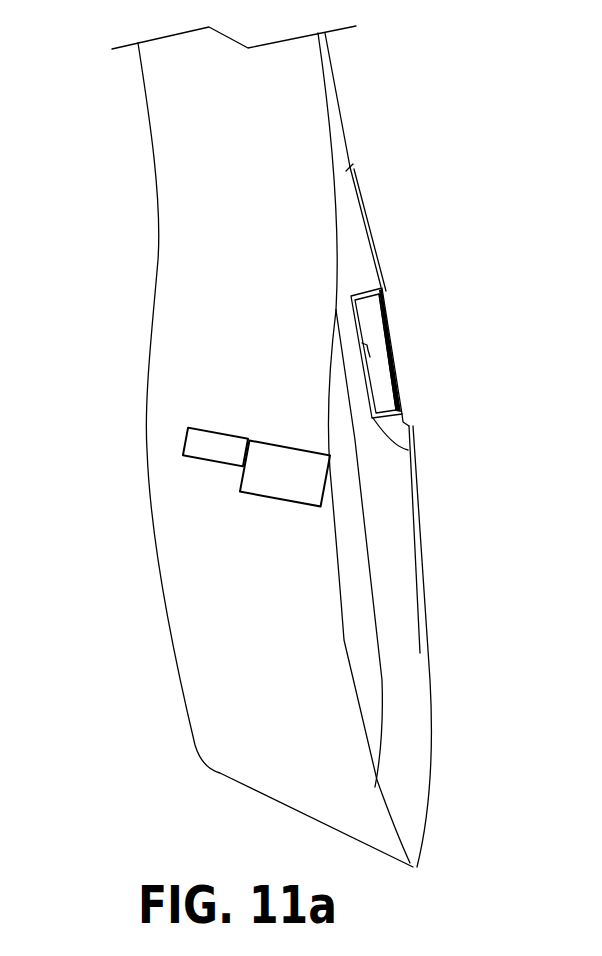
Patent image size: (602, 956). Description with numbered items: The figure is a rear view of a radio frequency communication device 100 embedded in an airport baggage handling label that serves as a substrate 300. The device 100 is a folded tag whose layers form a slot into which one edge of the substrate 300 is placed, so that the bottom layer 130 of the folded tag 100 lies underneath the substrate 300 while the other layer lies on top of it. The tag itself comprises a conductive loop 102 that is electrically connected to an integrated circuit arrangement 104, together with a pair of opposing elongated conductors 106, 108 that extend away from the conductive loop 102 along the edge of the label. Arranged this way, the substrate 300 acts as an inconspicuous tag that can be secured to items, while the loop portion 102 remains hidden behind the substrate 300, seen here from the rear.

The substrate 300 is at (223, 673).
The radio frequency communication device 100 is at (404, 288).
The elongated conductor 106 is at (356, 172).
The bottom layer 130 is at (397, 350).
The integrated circuit arrangement 104 is at (368, 357).
The conductive loop 102 is at (408, 450).
The elongated conductor 108 is at (423, 566).